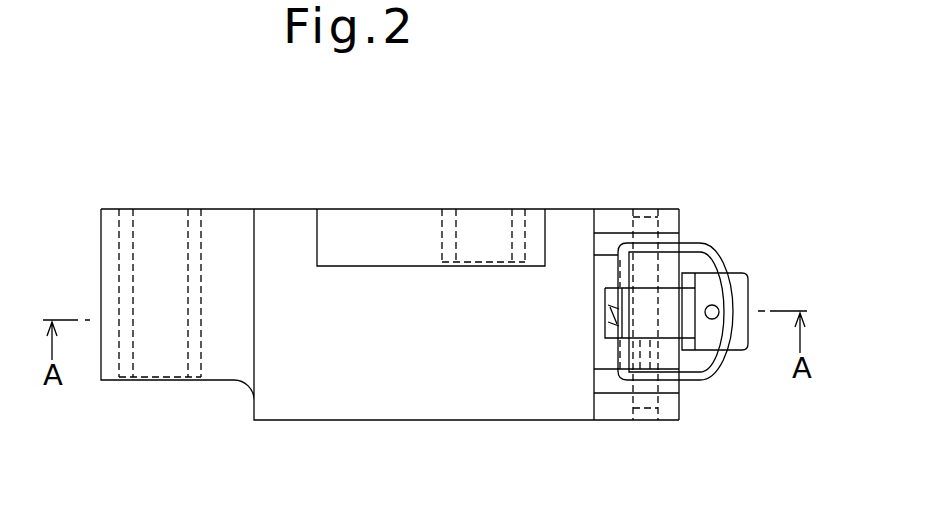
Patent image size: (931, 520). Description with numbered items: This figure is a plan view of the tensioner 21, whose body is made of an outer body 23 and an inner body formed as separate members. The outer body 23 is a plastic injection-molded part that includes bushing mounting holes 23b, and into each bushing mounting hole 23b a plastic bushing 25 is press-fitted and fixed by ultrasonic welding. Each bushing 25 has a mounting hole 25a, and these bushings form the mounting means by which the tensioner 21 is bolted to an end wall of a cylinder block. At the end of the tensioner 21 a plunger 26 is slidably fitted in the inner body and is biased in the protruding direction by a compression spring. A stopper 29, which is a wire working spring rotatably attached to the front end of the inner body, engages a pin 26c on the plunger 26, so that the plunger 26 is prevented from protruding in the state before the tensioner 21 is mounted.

The tensioner 21 is at (398, 293).
The outer body 23 is at (348, 422).
The bushing mounting hole 23b is at (128, 238).
The bushing 25 is at (193, 209).
The mounting hole 25a is at (187, 245).
The plunger 26 is at (748, 294).
The pin 26c is at (710, 320).
The stopper 29 is at (718, 252).